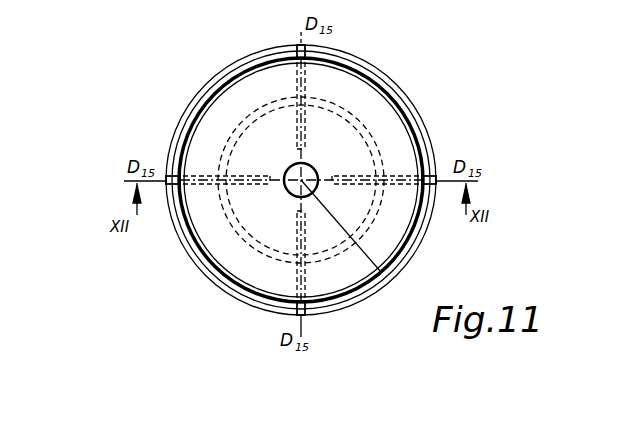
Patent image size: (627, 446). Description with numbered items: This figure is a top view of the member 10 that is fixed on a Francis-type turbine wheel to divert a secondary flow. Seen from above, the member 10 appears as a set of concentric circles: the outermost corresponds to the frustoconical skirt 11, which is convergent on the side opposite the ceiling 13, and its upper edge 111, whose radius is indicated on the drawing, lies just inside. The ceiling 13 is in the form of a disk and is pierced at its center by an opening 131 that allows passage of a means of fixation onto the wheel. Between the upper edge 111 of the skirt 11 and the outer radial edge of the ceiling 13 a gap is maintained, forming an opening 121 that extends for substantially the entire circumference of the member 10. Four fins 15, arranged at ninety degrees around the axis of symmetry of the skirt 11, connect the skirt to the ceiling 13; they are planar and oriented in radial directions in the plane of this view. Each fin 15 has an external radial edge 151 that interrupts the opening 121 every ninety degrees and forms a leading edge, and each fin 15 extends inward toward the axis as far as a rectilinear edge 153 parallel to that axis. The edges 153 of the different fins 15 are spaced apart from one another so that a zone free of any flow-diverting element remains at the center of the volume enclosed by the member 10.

The member 10 is at (468, 117).
The frustoconical skirt 11 is at (393, 127).
The ceiling 13 is at (373, 110).
The fin 15 is at (303, 81).
The opening 121 is at (190, 107).
The opening 131 is at (294, 167).
The external radial edge 151 is at (285, 313).
The edge 153 is at (307, 164).
The upper edge 111 is at (347, 226).